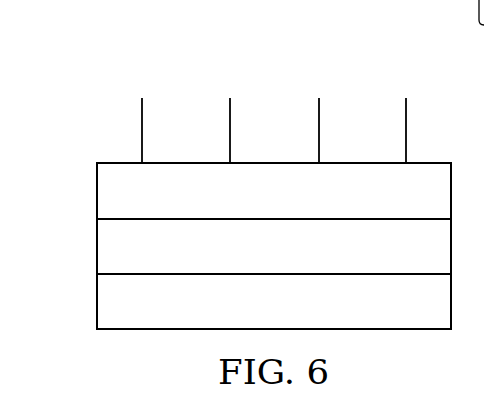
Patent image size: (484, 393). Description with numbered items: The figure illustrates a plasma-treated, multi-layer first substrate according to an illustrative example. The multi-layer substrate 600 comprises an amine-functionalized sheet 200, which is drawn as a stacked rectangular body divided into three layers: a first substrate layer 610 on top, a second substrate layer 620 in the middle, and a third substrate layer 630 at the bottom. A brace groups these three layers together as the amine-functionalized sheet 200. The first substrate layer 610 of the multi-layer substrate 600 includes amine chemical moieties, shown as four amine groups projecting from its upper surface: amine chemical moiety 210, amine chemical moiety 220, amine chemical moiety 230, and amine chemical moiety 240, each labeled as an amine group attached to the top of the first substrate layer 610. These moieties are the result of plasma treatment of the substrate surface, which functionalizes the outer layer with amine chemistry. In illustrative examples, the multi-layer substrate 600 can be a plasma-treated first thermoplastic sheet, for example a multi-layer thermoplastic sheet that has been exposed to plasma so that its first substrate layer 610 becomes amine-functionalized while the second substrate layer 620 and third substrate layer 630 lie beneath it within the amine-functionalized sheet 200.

The multi-layer substrate 600 is at (116, 54).
The amine-functionalized sheet 200 is at (78, 164).
The amine chemical moiety 210 is at (141, 128).
The amine chemical moiety 220 is at (229, 128).
The amine chemical moiety 230 is at (320, 128).
The amine chemical moiety 240 is at (407, 128).
The first substrate layer 610 is at (295, 207).
The second substrate layer 620 is at (295, 262).
The third substrate layer 630 is at (295, 316).